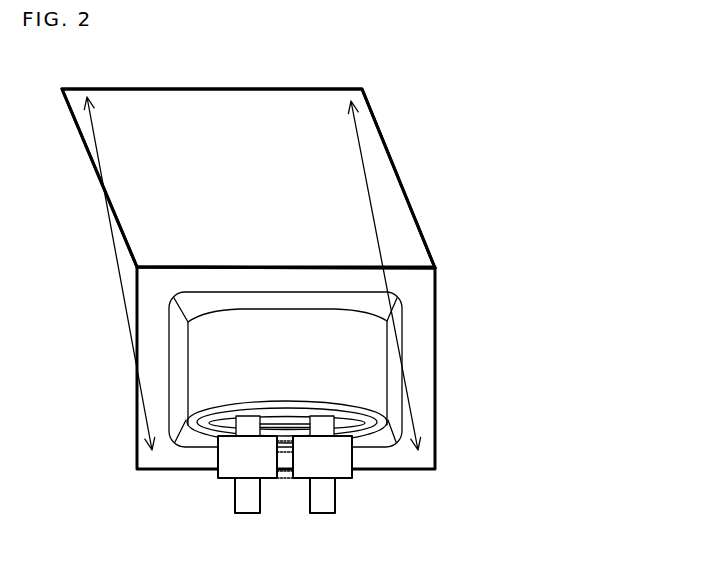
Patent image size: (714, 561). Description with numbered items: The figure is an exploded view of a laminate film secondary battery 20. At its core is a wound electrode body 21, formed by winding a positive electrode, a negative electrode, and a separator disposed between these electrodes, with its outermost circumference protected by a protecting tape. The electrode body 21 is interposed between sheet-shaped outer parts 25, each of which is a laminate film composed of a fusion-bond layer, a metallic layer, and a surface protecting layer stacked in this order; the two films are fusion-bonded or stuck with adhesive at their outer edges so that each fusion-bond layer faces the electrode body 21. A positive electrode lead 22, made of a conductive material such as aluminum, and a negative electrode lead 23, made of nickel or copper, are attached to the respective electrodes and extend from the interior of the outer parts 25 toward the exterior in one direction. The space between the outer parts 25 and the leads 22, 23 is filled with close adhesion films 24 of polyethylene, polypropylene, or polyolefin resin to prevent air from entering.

The laminate film secondary battery 20 is at (408, 98).
The wound electrode body 21 is at (352, 359).
The positive electrode lead 22 is at (243, 500).
The negative electrode lead 23 is at (322, 502).
The close adhesion film 24 is at (340, 462).
The outer part 25 is at (300, 182).